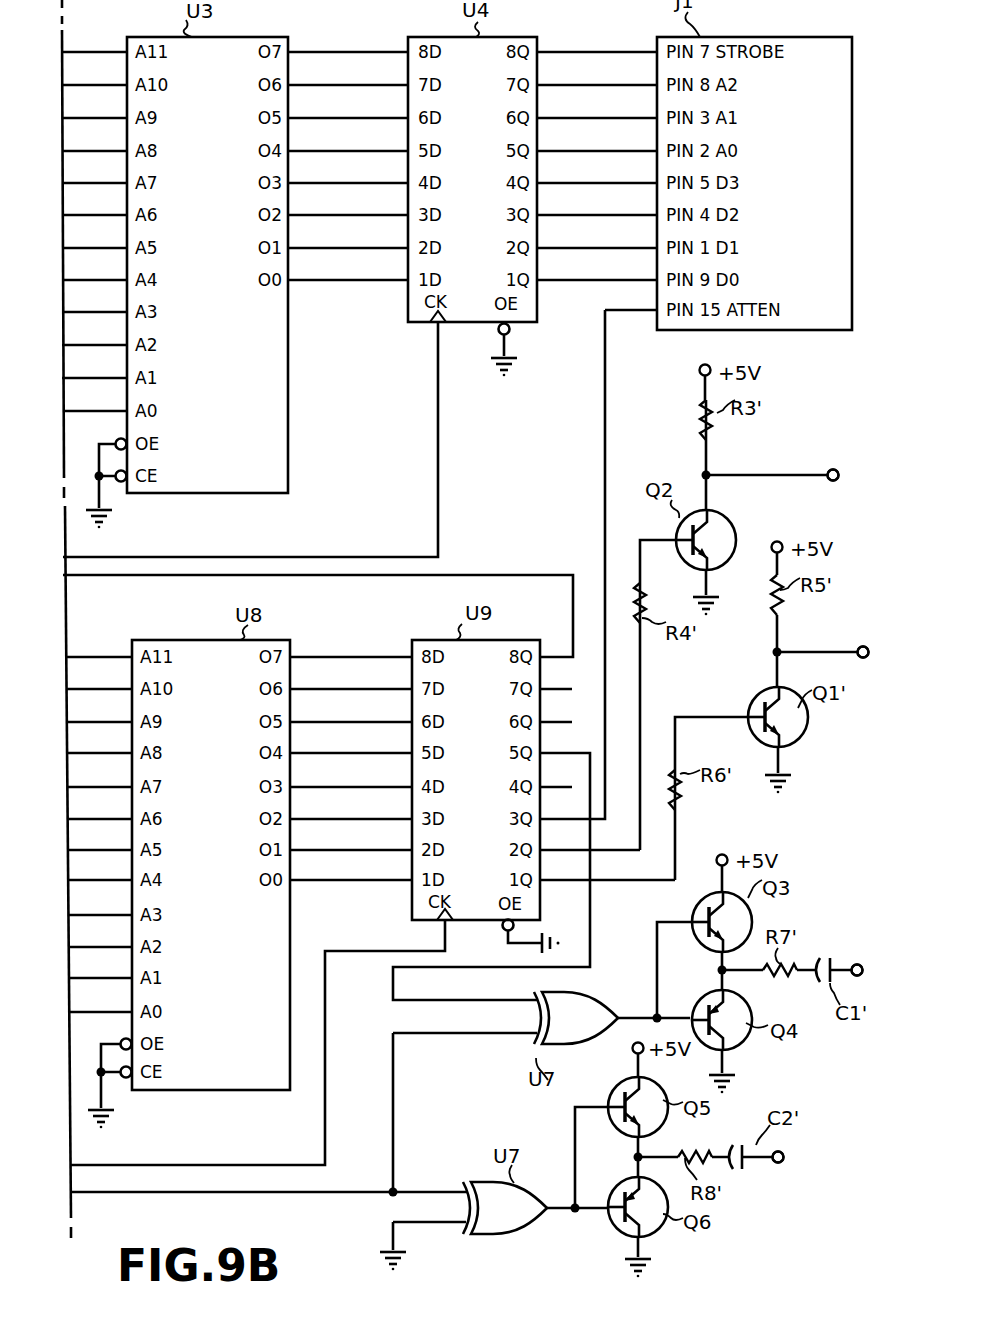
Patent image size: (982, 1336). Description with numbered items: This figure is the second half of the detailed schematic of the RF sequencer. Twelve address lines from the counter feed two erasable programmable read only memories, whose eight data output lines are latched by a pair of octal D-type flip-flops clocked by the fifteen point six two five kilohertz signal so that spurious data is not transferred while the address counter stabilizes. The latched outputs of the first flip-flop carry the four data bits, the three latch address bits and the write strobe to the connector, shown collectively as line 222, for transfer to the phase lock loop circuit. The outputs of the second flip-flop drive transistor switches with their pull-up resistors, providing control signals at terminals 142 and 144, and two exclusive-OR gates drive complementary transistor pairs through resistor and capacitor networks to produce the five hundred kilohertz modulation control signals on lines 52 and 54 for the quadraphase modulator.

The line 222 is at (774, 36).
The output terminal 142 is at (802, 470).
The output terminal 144 is at (838, 650).
The line 52 is at (839, 964).
The line 54 is at (774, 1163).